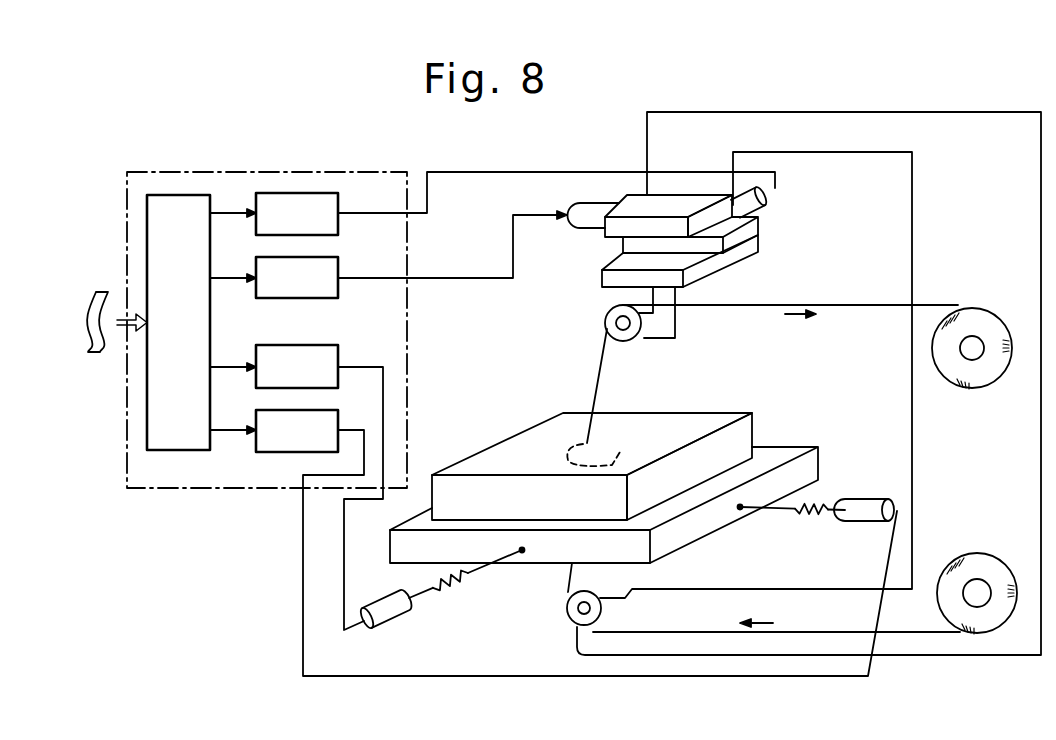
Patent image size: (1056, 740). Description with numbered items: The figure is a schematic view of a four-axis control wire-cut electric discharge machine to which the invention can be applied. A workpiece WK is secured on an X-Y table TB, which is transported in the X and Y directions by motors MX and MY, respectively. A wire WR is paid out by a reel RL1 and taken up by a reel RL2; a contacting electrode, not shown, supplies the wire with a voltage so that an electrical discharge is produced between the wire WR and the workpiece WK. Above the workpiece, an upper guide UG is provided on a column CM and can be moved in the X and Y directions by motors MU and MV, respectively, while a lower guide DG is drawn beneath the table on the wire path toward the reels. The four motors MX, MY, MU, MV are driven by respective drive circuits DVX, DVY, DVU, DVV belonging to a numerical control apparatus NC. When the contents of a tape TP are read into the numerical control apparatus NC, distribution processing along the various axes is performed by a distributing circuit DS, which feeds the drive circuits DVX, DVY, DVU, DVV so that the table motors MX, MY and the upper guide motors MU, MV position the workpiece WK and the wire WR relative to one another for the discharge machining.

The numerical control apparatus NC is at (343, 170).
The distributing circuit DS is at (178, 322).
The tape TP is at (93, 352).
The drive circuit DVV is at (492, 203).
The drive circuit DVU is at (388, 254).
The drive circuit DVY is at (296, 487).
The drive circuit DVX is at (553, 543).
The motor MU is at (593, 202).
The motor MV is at (766, 201).
The column CM is at (911, 235).
The upper guide UG is at (633, 342).
The wire WR is at (597, 362).
The workpiece WK is at (728, 412).
The work table TB is at (797, 443).
The motor MX is at (872, 493).
The motor MY is at (400, 622).
The lower wire guide roller DG is at (573, 622).
The reel RL1 is at (973, 553).
The reel RL2 is at (973, 387).